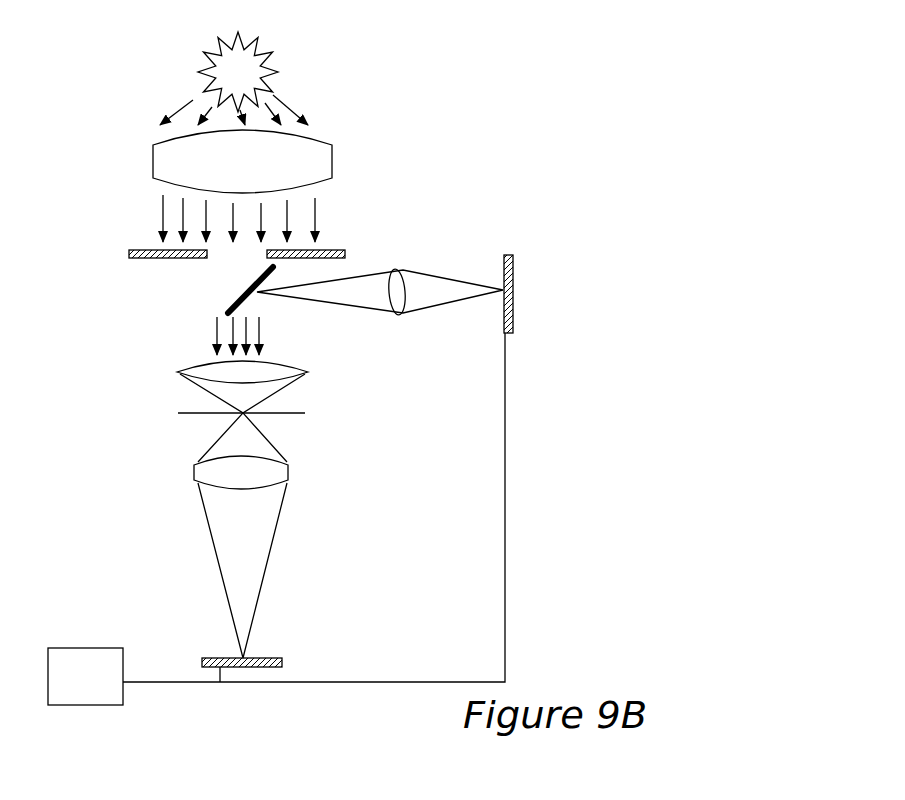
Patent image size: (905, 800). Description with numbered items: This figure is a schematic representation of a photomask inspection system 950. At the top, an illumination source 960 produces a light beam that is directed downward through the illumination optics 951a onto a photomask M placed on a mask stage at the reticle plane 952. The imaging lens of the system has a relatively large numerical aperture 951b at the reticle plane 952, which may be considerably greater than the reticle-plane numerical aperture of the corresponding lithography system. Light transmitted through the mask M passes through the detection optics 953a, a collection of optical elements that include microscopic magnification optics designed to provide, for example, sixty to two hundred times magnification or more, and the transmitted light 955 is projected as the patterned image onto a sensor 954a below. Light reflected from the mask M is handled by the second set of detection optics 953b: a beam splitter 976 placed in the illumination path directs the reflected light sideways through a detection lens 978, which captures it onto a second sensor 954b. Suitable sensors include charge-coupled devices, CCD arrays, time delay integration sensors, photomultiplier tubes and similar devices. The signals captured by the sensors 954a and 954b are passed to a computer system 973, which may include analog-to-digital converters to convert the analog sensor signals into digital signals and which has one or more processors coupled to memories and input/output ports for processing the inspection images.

The inspection system 950 is at (360, 68).
The illumination source 960 is at (265, 50).
The illumination optics 951a is at (107, 380).
The beam splitter 976 is at (257, 292).
The detection optics 953b is at (500, 270).
The detection lens 978 is at (397, 292).
The sensor 954b is at (507, 252).
The numerical aperture 951b is at (275, 396).
The reticle plane 952 is at (168, 413).
The photomask M is at (288, 413).
The detection optics 953a is at (150, 420).
The light cone / imaging beam 955 is at (242, 553).
The sensor 954a is at (263, 657).
The computer system 973 is at (85, 676).